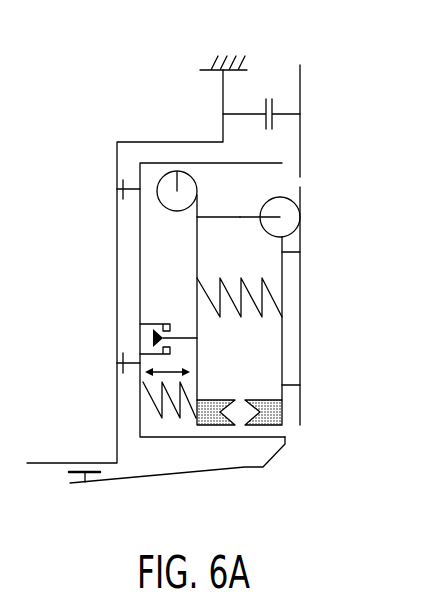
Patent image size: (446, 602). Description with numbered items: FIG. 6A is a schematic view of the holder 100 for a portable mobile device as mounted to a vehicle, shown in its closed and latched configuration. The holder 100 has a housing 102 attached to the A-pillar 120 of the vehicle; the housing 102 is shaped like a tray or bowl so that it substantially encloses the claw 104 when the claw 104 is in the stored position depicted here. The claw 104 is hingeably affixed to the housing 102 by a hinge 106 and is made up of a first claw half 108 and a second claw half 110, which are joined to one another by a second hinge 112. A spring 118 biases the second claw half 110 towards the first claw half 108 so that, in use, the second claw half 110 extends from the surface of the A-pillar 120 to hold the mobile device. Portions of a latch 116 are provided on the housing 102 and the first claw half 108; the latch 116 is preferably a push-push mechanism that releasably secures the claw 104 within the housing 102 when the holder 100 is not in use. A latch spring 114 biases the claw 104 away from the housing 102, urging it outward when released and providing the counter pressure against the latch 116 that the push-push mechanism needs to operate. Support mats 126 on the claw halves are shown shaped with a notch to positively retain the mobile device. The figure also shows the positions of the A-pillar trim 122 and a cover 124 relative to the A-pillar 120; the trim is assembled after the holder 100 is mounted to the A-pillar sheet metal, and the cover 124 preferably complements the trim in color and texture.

The holder 100 is at (90, 84).
The housing 102 is at (195, 161).
The claw 104 is at (232, 205).
The hinge 106 is at (175, 211).
The first claw half 108 is at (197, 275).
The second claw half 110 is at (287, 275).
The second hinge 112 is at (285, 212).
The latch spring 114 is at (160, 393).
The latch 116 is at (152, 338).
The spring 118 is at (270, 305).
The A-pillar 120 is at (117, 223).
The A-pillar trim 122 is at (300, 99).
The cover 124 is at (300, 385).
The support mats 126 is at (265, 426).